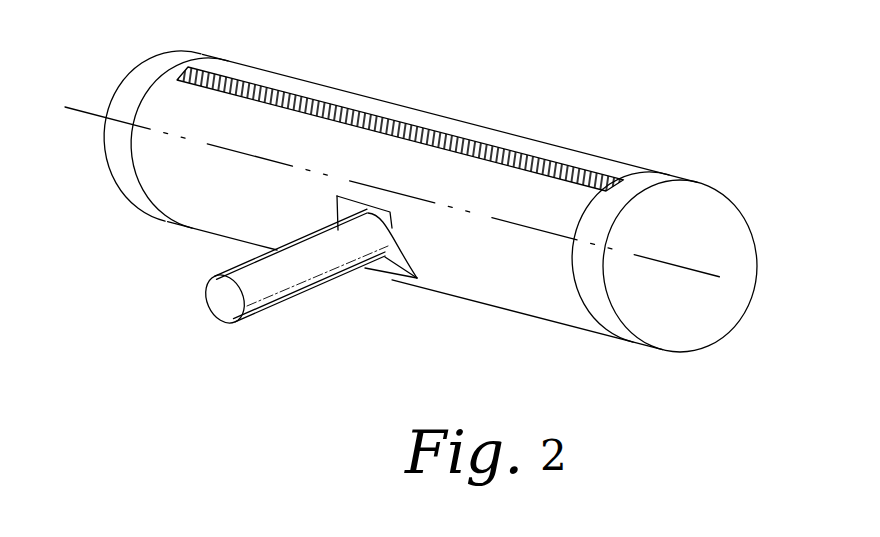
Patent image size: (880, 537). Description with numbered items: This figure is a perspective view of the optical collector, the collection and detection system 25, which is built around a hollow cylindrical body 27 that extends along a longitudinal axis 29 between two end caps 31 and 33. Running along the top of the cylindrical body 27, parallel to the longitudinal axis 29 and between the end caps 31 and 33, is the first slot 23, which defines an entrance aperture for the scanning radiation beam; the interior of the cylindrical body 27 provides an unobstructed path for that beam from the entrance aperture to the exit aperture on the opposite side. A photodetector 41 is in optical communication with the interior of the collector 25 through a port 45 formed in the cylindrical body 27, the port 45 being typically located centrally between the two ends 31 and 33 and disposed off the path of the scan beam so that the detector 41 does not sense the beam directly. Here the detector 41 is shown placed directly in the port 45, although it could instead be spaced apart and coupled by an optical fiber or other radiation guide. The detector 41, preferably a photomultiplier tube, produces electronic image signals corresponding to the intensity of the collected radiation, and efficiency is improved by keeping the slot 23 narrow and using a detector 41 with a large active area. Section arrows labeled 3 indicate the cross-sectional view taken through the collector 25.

The section line 3- 3 is at (688, 168).
The first slot 23 is at (485, 140).
The collection and detection system 25 is at (411, 212).
The hollow cylindrical body 27 is at (543, 295).
The longitudinal axis 29 is at (698, 273).
The end cap 31 is at (150, 62).
The end cap 33 is at (703, 344).
The photodetector 41 is at (218, 300).
The port 45 is at (348, 213).